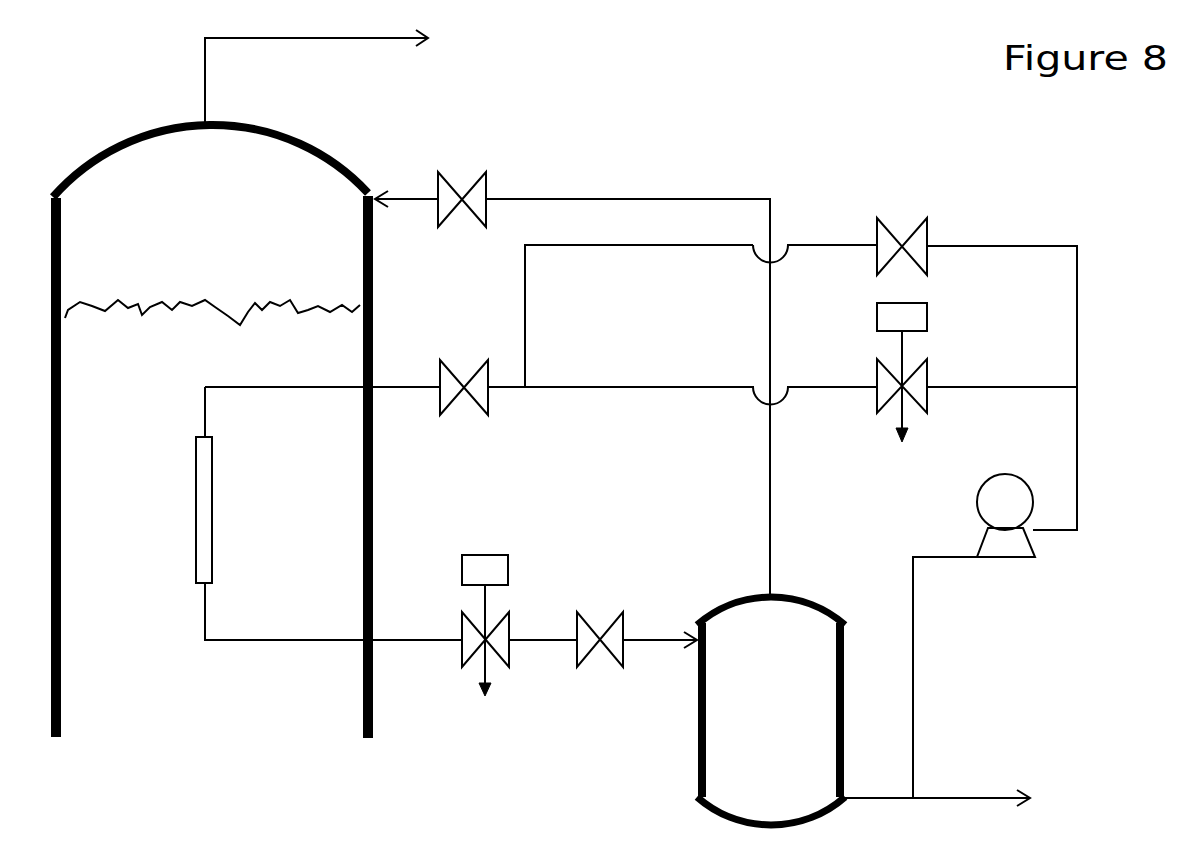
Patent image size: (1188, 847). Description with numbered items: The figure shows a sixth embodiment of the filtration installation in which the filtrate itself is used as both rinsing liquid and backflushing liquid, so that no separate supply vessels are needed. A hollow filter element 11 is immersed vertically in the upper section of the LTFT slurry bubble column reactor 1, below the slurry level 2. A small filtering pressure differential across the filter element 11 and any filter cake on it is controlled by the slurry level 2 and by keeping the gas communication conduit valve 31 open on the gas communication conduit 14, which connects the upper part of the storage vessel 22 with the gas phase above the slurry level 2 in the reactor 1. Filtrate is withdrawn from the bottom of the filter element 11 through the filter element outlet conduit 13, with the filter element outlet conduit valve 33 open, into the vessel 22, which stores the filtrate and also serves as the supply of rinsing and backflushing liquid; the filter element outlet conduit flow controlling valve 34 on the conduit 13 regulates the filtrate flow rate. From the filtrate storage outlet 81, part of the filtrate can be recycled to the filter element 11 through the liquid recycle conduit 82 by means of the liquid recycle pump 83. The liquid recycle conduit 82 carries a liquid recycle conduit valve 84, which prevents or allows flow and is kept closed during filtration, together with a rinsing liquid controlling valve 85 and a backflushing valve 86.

The LTFT slurry bubble column reactor 1 is at (240, 384).
The slurry level 2 is at (212, 289).
The filter element 11 is at (229, 485).
The filter element outlet conduit 13 is at (333, 611).
The gas communication conduit 14 is at (628, 376).
The vessel for storage of filtrate and rinsing fluid 22 is at (771, 711).
The gas communication conduit valve 31 is at (435, 170).
The filter element outlet conduit valve 33 is at (637, 609).
The filter element outlet conduit flow controlling valve 34 is at (519, 599).
The filtrate storage outlet 81 is at (937, 778).
The liquid recycle conduit 82 is at (945, 677).
The liquid recycle pump 83 is at (1003, 492).
The liquid recycle conduit valve 84 is at (541, 330).
The rinsing liquid controlling valve 85 is at (977, 370).
The backflushing valve 86 is at (977, 348).